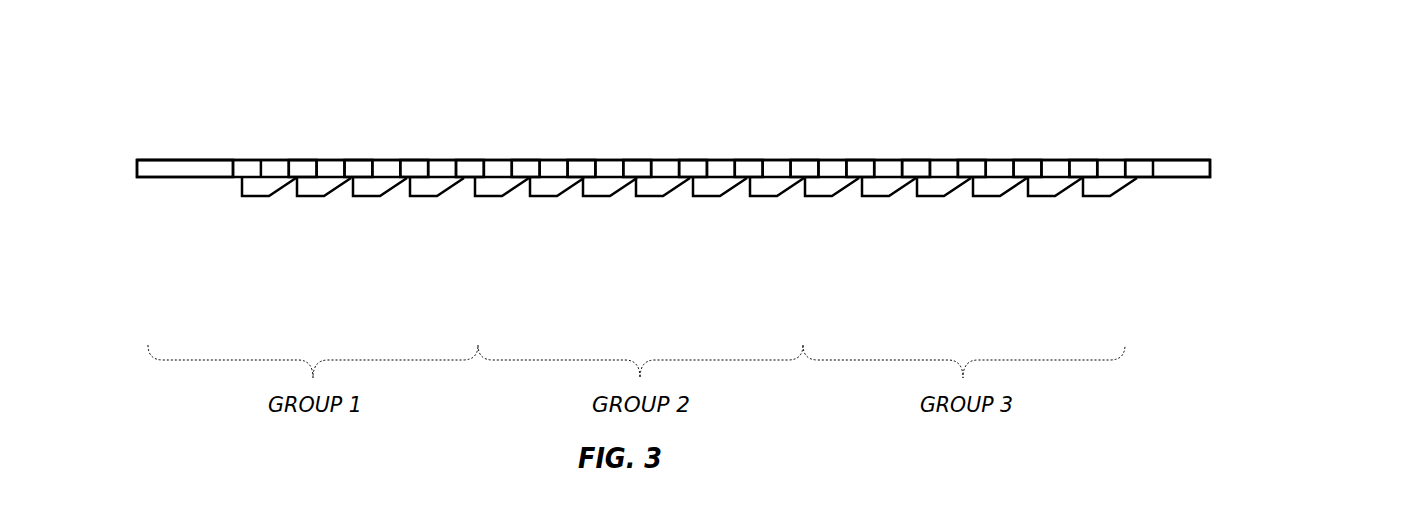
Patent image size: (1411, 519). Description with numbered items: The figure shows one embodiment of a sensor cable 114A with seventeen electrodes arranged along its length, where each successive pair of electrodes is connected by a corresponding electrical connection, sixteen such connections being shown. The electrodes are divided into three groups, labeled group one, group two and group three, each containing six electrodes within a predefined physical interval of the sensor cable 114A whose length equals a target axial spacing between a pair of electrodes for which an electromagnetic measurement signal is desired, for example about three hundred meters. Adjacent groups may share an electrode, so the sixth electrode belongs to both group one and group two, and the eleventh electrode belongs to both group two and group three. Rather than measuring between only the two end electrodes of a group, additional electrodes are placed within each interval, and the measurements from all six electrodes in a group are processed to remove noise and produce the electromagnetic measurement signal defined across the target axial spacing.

The sensor cable 114A is at (1277, 108).